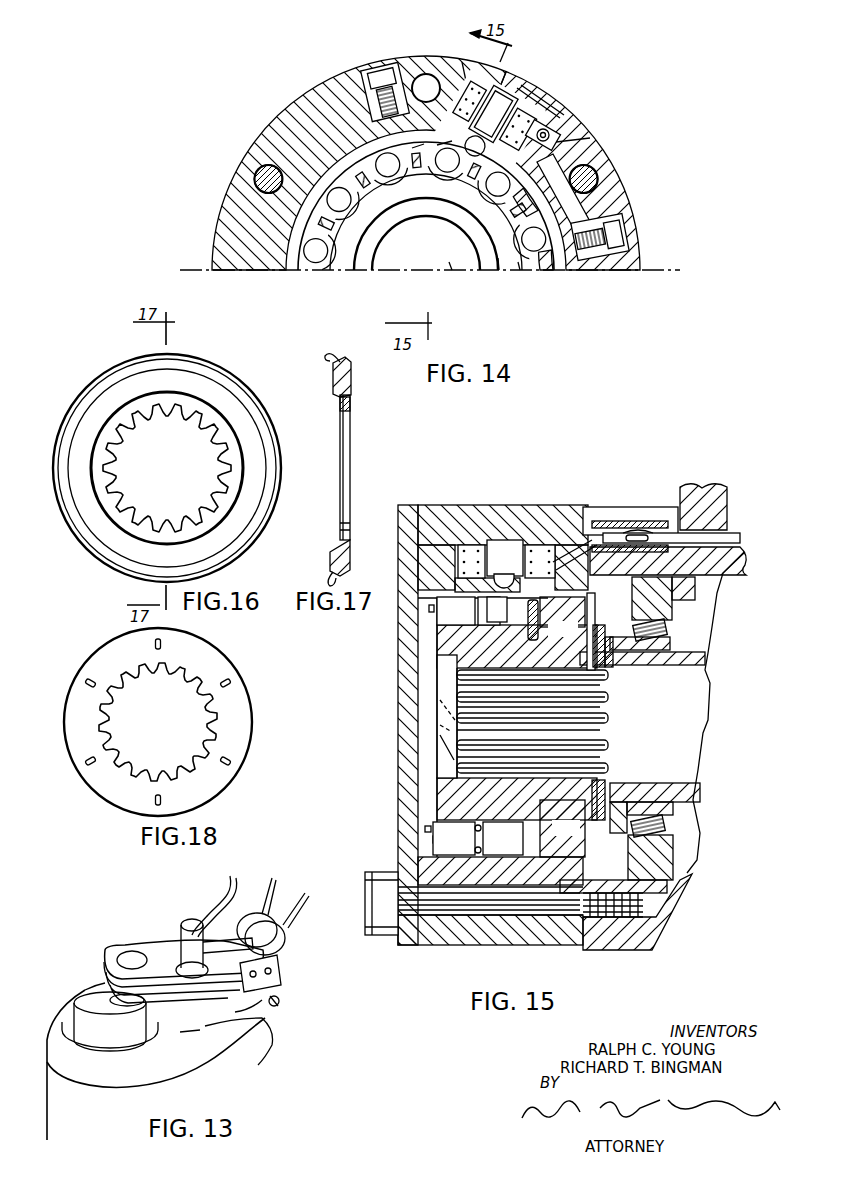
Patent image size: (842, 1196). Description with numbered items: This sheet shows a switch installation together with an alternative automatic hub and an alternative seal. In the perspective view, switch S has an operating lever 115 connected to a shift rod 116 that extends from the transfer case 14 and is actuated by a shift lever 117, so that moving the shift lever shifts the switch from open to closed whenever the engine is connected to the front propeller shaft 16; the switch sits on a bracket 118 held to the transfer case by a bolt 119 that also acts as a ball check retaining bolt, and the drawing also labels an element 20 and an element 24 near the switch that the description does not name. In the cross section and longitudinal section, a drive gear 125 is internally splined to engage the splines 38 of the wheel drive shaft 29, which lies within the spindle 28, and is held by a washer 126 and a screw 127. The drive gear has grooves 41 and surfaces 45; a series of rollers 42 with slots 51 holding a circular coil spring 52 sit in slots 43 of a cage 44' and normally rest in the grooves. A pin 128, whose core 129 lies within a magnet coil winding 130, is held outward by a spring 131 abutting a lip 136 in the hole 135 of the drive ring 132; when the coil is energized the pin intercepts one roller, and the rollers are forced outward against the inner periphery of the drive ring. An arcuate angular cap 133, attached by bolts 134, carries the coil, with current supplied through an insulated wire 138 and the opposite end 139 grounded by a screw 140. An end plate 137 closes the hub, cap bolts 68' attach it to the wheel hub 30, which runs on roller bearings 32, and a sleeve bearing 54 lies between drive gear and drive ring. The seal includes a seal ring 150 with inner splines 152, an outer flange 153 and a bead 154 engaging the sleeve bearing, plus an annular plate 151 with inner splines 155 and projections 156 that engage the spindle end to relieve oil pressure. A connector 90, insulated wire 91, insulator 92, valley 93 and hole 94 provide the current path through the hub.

In FIG. 13, the transfer case 14 is at (262, 1063).
In FIG. 13, the front propeller shaft 16 is at (84, 1012).
In FIG. 13, the solenoid 20 is at (271, 884).
In FIG. 13, the terminal lead 24 is at (296, 922).
In FIG. 13, the operating lever 115 is at (204, 945).
In FIG. 13, the shift rod 116 is at (188, 921).
In FIG. 13, the shift lever 117 is at (230, 884).
In FIG. 13, the bracket 118 is at (282, 979).
In FIG. 13, the bolt 119 is at (281, 1002).
In FIG. 13, the switch S is at (286, 955).
In FIG. 14, the drive gear 125 is at (518, 262).
In FIG. 15, the drive gear 125 is at (437, 640).
In FIG. 14, the washer 126 is at (498, 258).
In FIG. 15, the washer 126 is at (445, 685).
In FIG. 14, the screw 127 is at (449, 262).
In FIG. 15, the screw 127 is at (436, 724).
In FIG. 14, the pin 128 is at (503, 175).
In FIG. 14, the core 129 is at (500, 128).
In FIG. 15, the core 129 is at (518, 565).
In FIG. 14, the magnet coil winding 130 is at (526, 118).
In FIG. 15, the magnet coil winding 130 is at (470, 545).
In FIG. 14, the spring 131 is at (437, 145).
In FIG. 15, the spring 131 is at (502, 609).
In FIG. 14, the drive ring 132 is at (262, 148).
In FIG. 15, the drive ring 132 is at (408, 765).
In FIG. 14, the arcuate angular cap 133 is at (560, 113).
In FIG. 15, the arcuate angular cap 133 is at (565, 512).
In FIG. 14, the bolts 134 is at (374, 70).
In FIG. 14, the central well or hole 135 is at (507, 76).
In FIG. 15, the lip 136 is at (528, 615).
In FIG. 15, the end plate 137 is at (405, 505).
In FIG. 15, the insulated wire 138 is at (558, 560).
In FIG. 14, the opposite end of the wire of magnet winding 139 is at (590, 138).
In FIG. 14, the screw 140 is at (560, 130).
In FIG. 15, the seal ring 150 is at (609, 670).
In FIG. 16, the seal ring 150 is at (237, 437).
In FIG. 17, the seal ring 150 is at (349, 401).
In FIG. 15, the annular plate 151 is at (601, 640).
In FIG. 18, the annular plate 151 is at (222, 664).
In FIG. 16, the inner splines 152 is at (187, 412).
In FIG. 17, the inner splines 152 is at (340, 416).
In FIG. 15, the outer flange 153 is at (596, 625).
In FIG. 17, the outer flange 153 is at (338, 358).
In FIG. 16, the bead 154 is at (227, 388).
In FIG. 17, the bead 154 is at (334, 357).
In FIG. 18, the inner splines 155 is at (214, 708).
In FIG. 15, the projections 156 is at (650, 665).
In FIG. 18, the projections 156 is at (229, 684).
In FIG. 15, the spindle 28 is at (705, 660).
In FIG. 15, the drive shaft or axle 29 is at (705, 716).
In FIG. 15, the wheel hub 30 is at (688, 887).
In FIG. 15, the roller bearings 32 is at (668, 634).
In FIG. 15, the splines 38 is at (610, 730).
In FIG. 14, the grooves 41 is at (372, 233).
In FIG. 14, the rollers 42 is at (376, 160).
In FIG. 15, the rollers 42 is at (514, 848).
In FIG. 14, the slots 43 is at (320, 212).
In FIG. 15, the slots 43 is at (425, 828).
In FIG. 14, the cage 44' is at (403, 134).
In FIG. 15, the cage 44' is at (430, 731).
In FIG. 14, the surfaces 45 is at (355, 203).
In FIG. 15, the slots 51 is at (476, 834).
In FIG. 15, the circular coil spring 52 is at (466, 842).
In FIG. 15, the sleeve bearing 54 is at (575, 637).
In FIG. 14, the cap bolts 68' is at (419, 141).
In FIG. 15, the cap bolts 68' is at (474, 924).
In FIG. 15, the connector 90 is at (640, 530).
In FIG. 15, the insulated wire 91 is at (740, 538).
In FIG. 15, the insulator 92 is at (600, 521).
In FIG. 15, the valley 93 is at (628, 512).
In FIG. 15, the hole 94 is at (722, 525).